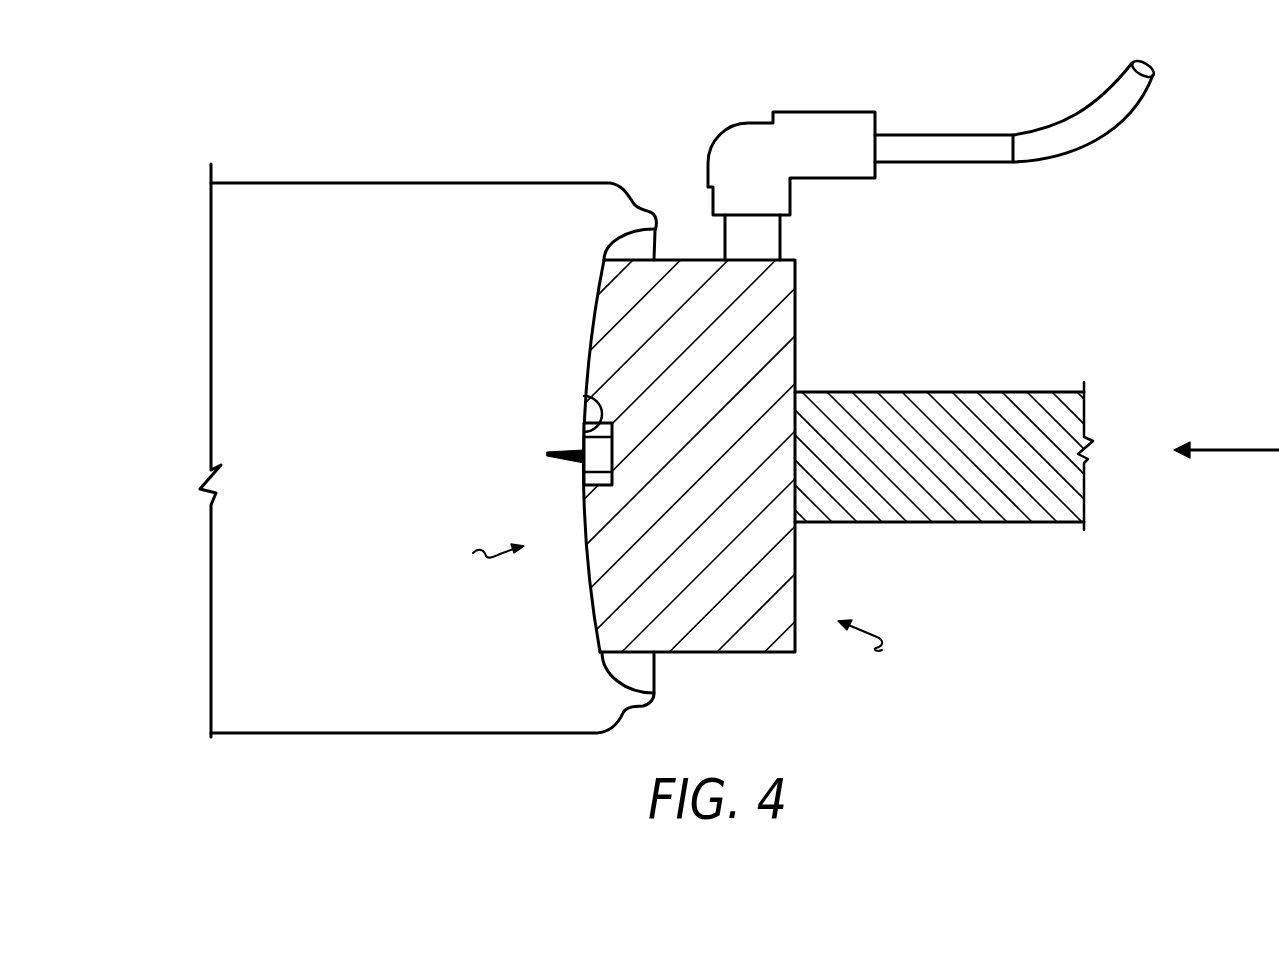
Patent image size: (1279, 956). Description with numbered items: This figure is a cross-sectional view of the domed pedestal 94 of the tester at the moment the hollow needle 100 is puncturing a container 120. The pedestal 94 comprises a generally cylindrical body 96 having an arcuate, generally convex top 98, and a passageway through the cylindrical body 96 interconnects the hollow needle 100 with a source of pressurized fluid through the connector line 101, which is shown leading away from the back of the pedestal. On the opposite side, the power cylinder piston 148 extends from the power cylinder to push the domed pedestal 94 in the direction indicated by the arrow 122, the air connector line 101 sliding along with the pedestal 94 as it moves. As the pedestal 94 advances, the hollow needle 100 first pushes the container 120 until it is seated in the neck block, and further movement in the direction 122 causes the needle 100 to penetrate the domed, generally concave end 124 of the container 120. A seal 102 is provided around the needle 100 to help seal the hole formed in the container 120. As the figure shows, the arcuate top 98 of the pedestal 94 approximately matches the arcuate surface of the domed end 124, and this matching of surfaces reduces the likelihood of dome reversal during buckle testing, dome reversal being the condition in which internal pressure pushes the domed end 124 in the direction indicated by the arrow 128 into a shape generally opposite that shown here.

The domed pedestal 94 is at (879, 631).
The cylindrical body 96 is at (797, 357).
The arcuate top 98 is at (586, 607).
The hollow needle 100 is at (549, 449).
The connector line 101 is at (960, 134).
The seal 102 is at (590, 398).
The container 120 is at (445, 183).
The direction arrow 122 is at (1212, 450).
The domed end 124 is at (608, 665).
The dome reversal arrow 128 is at (478, 551).
The power cylinder piston 148 is at (935, 523).